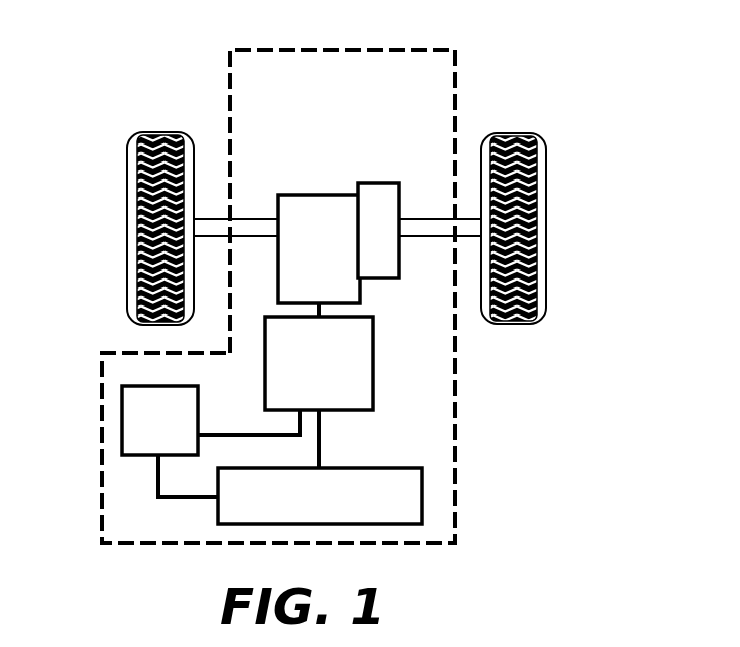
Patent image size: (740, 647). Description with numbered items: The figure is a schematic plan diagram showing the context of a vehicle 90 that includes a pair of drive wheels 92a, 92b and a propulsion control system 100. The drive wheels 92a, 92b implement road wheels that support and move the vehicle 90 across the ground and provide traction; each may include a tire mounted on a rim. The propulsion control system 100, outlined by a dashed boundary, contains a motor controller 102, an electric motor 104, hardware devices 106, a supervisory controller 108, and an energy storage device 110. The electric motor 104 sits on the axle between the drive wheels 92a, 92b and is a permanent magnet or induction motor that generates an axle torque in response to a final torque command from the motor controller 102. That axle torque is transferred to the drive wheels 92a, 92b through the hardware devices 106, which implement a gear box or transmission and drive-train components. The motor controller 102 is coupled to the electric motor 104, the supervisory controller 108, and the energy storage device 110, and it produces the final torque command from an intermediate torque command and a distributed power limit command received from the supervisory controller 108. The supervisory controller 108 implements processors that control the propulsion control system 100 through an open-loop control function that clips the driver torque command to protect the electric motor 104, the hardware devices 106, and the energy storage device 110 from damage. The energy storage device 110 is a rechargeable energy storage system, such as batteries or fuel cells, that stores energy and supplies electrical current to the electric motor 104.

The vehicle 90 is at (178, 80).
The drive wheel 92a is at (127, 178).
The drive wheel 92b is at (546, 172).
The propulsion control system 100 is at (296, 90).
The motor controller 102 is at (341, 375).
The electric motor 104 is at (341, 263).
The hardware devices 106 is at (377, 183).
The supervisory controller 108 is at (182, 432).
The energy storage device 110 is at (341, 509).